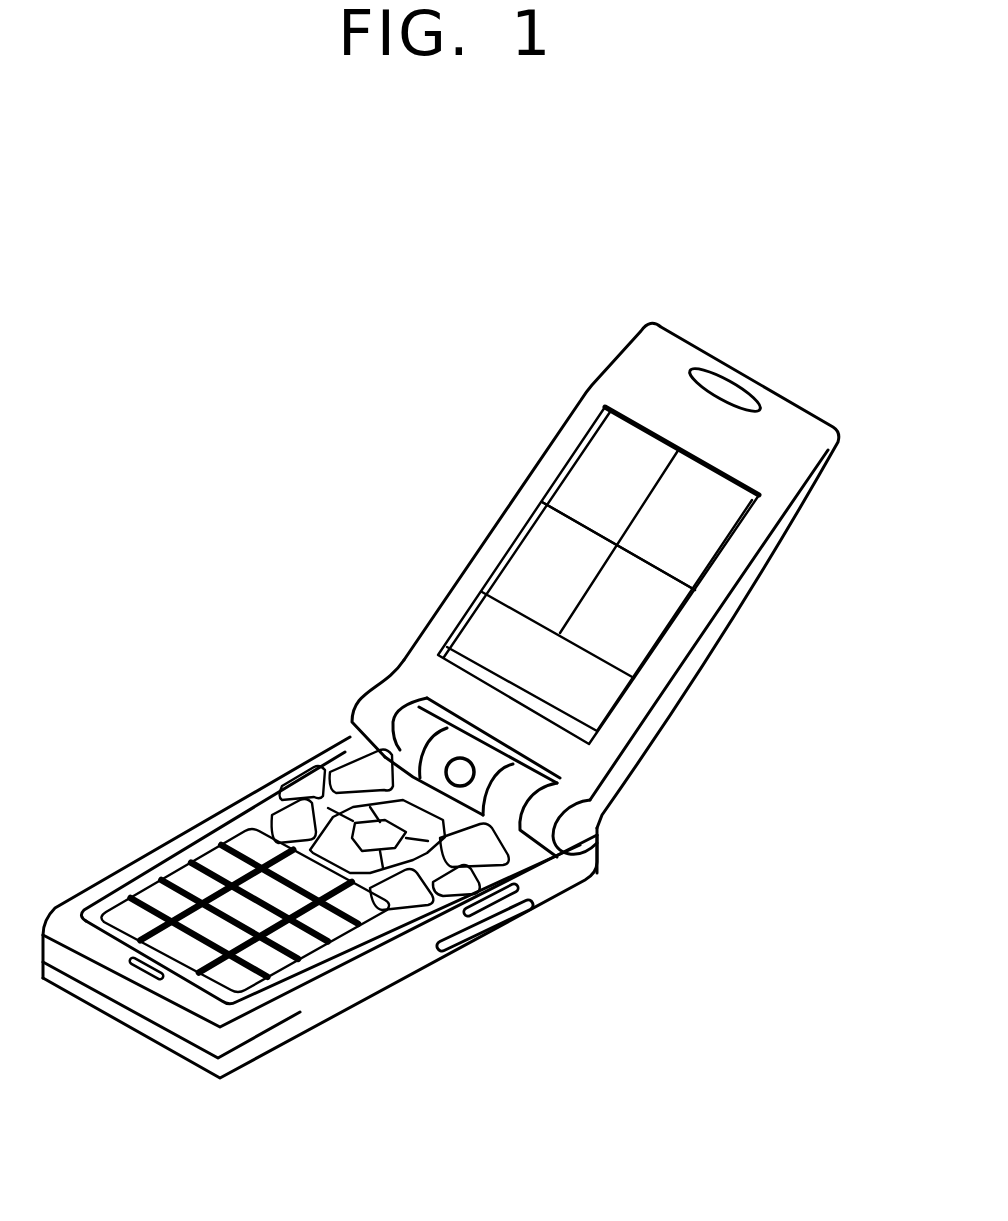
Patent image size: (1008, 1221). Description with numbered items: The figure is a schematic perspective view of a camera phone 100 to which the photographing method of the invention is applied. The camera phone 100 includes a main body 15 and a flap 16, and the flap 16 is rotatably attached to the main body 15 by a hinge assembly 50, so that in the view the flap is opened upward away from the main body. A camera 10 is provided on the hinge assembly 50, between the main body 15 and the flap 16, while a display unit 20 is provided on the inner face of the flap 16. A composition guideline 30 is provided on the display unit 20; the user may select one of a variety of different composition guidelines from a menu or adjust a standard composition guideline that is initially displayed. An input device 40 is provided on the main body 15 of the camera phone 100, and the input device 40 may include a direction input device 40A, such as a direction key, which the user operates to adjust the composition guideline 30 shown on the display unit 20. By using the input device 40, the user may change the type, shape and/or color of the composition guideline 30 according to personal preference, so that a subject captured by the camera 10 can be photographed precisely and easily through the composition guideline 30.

The camera phone 100 is at (393, 998).
The main body 15 is at (295, 1017).
The flap 16 is at (658, 718).
The display unit 20 is at (611, 462).
The composition guideline 30 is at (690, 591).
The input device 40 is at (303, 802).
The direction input device 40A is at (356, 790).
The hinge assembly 50 is at (597, 870).
The camera 10 is at (458, 769).